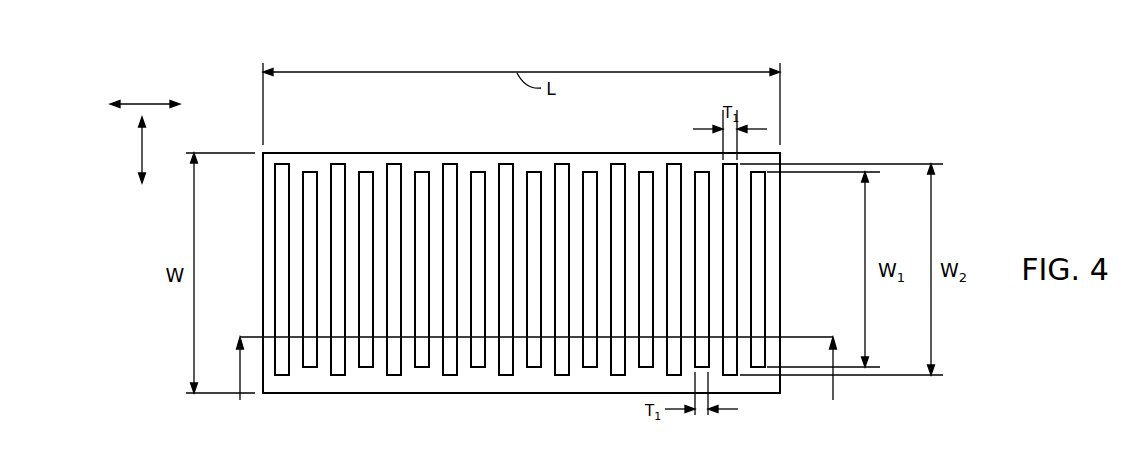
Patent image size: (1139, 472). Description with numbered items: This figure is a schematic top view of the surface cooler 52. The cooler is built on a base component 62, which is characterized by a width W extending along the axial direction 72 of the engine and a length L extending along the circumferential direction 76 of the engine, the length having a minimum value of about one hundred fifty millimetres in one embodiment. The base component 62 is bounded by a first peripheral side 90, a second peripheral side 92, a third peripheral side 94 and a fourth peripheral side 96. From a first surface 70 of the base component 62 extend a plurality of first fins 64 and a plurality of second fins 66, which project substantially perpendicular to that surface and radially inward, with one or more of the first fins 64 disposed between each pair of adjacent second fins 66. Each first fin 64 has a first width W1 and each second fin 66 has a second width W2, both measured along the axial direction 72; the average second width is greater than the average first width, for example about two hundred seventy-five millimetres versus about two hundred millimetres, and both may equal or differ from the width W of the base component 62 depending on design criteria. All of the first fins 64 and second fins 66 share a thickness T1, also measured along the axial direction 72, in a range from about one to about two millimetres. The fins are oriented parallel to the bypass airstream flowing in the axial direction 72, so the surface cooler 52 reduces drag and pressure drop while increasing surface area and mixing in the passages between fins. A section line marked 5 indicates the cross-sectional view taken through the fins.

The surface cooler 52 is at (836, 88).
The base component 62 is at (260, 222).
The plurality of first fins 64 is at (317, 187).
The plurality of second fins 66 is at (284, 163).
The first surface 70 is at (461, 158).
The axial direction 72 is at (143, 137).
The circumferential direction 76 is at (140, 103).
The first peripheral side 90 is at (262, 298).
The second peripheral side 92 is at (781, 236).
The third peripheral side 94 is at (462, 394).
The fourth peripheral side 96 is at (514, 152).
The section line 5- 5 is at (536, 383).